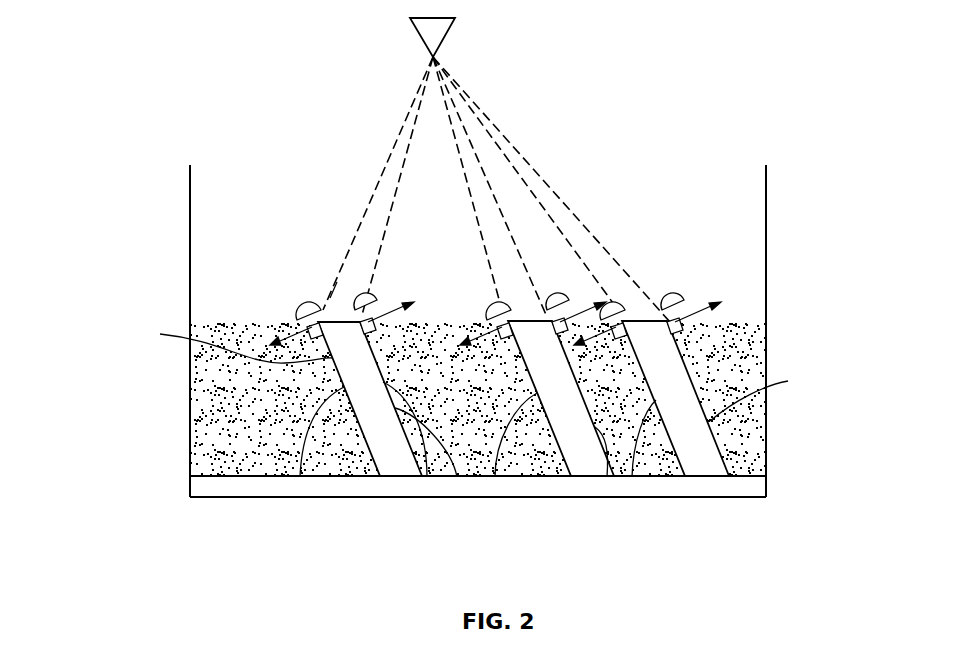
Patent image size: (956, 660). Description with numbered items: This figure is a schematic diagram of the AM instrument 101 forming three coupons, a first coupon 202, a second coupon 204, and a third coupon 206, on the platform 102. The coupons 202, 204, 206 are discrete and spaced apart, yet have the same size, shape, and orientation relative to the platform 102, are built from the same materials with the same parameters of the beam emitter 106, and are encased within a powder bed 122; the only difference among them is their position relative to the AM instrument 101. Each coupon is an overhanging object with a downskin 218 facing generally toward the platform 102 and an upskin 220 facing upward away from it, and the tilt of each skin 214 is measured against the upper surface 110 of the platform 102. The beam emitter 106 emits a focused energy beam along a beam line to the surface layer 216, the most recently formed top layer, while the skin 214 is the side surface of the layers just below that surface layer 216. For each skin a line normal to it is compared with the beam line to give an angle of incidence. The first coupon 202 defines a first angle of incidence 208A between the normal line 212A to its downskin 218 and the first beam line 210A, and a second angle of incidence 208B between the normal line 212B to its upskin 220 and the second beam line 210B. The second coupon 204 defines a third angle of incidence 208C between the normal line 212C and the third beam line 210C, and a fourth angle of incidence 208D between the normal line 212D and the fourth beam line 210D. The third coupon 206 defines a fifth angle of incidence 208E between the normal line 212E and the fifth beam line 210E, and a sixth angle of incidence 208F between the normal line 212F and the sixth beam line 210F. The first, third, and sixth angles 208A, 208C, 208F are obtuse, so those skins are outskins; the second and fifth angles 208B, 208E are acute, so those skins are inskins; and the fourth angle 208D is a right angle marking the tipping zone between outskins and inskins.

The AM instrument 101 is at (220, 82).
The platform 102 is at (258, 487).
The beam emitter 106 is at (430, 30).
The upper surface 110 is at (233, 473).
The powder bed 122 is at (215, 410).
The first coupon 202 is at (370, 425).
The second coupon 204 is at (565, 432).
The third coupon 206 is at (685, 407).
The first angle of incidence 208A is at (290, 316).
The second angle of incidence 208B is at (350, 302).
The third angle of incidence 208C is at (492, 310).
The fourth angle of incidence 208D is at (560, 298).
The fifth angle of incidence 208E is at (614, 302).
The sixth angle of incidence 208F is at (678, 298).
The first beam line 210A is at (367, 203).
The second beam line 210B is at (397, 185).
The third beam line 210C is at (457, 143).
The fourth beam line 210D is at (480, 163).
The fifth beam line 210E is at (517, 165).
The sixth beam line 210F is at (620, 270).
The line normal to downskin of first coupon 212A is at (300, 302).
The line normal to upskin of first coupon 212B is at (380, 292).
The line normal to downskin of second coupon 212C is at (490, 330).
The line normal to upskin of second coupon 212D is at (583, 292).
The line normal to downskin of third coupon 212E is at (590, 337).
The line normal to upskin of third coupon 212F is at (703, 302).
The skin 214 is at (462, 565).
The surface layer 216 is at (335, 287).
The downskin 218 is at (300, 477).
The upskin 220 is at (427, 477).